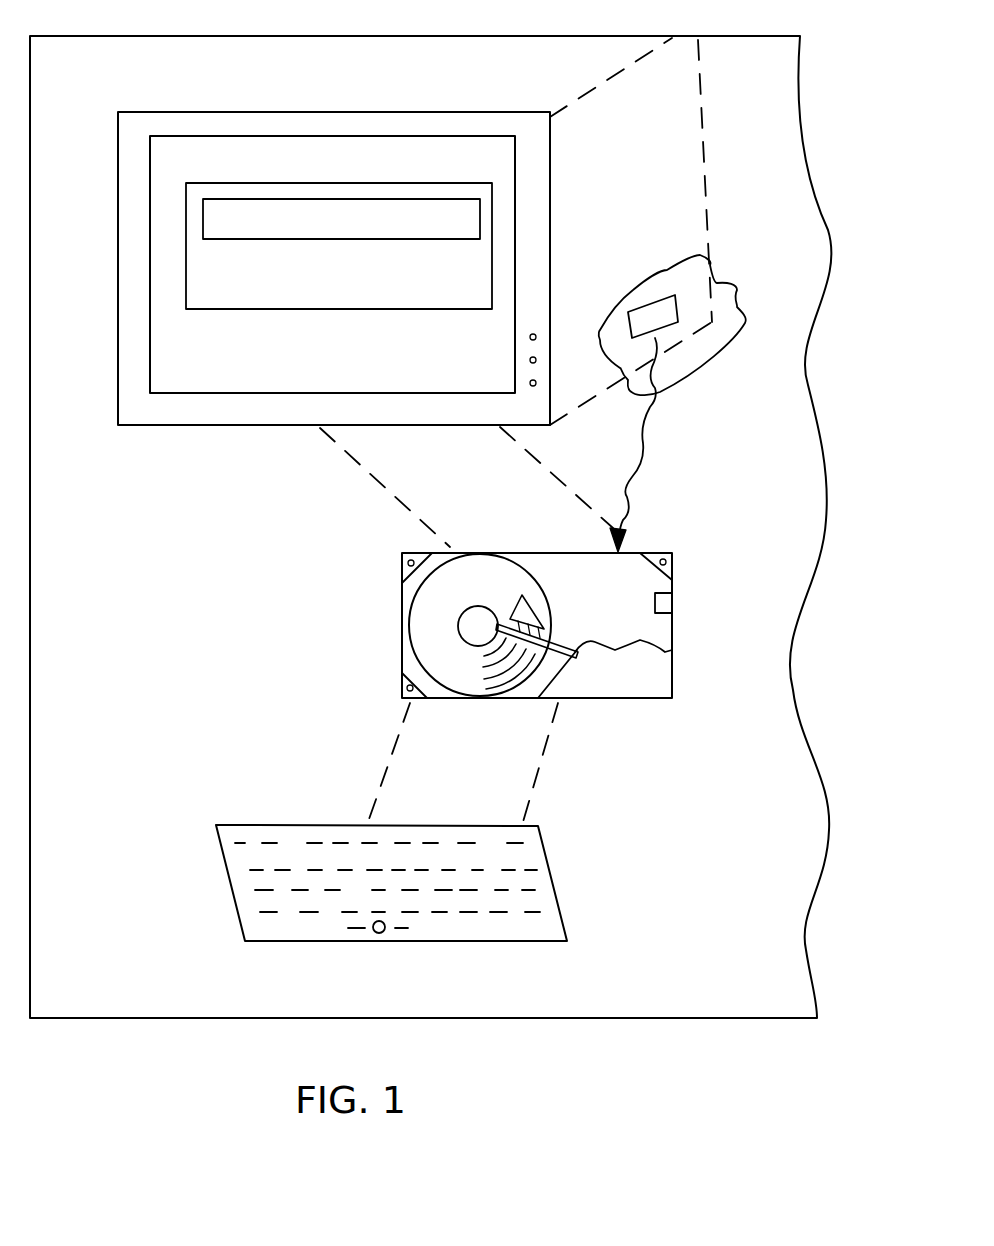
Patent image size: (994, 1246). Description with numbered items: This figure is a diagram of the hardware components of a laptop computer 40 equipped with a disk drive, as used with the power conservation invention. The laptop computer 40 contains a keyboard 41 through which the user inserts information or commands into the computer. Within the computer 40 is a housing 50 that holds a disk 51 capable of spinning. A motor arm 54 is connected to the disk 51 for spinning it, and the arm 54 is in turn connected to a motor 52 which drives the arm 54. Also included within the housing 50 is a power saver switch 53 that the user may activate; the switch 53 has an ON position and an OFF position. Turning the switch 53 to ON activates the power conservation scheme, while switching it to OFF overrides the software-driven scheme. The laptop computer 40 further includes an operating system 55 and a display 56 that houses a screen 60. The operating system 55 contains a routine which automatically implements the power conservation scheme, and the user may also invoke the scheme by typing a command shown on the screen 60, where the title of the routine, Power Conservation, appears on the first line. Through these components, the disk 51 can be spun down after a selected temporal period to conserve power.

The laptop computer 40 is at (83, 1018).
The keyboard 41 is at (558, 896).
The housing 50 is at (402, 590).
The disk 51 is at (430, 652).
The motor 52 is at (603, 698).
The power saver switch 53 is at (672, 603).
The motor arm 54 is at (565, 644).
The operating system 55 is at (665, 290).
The display 56 is at (118, 236).
The screen 60 is at (393, 200).